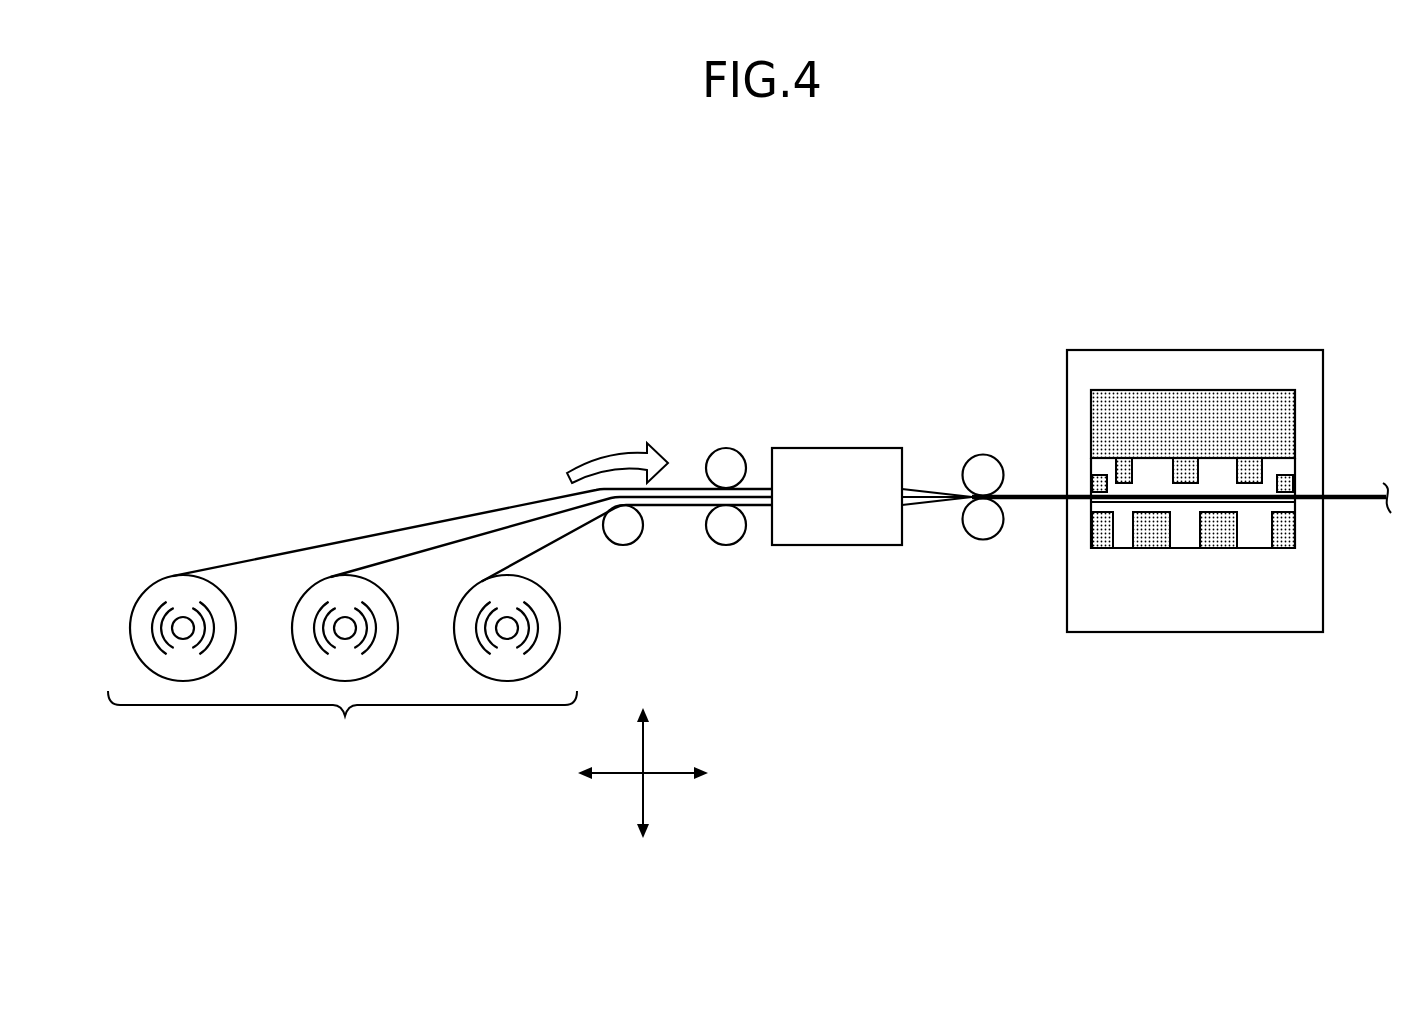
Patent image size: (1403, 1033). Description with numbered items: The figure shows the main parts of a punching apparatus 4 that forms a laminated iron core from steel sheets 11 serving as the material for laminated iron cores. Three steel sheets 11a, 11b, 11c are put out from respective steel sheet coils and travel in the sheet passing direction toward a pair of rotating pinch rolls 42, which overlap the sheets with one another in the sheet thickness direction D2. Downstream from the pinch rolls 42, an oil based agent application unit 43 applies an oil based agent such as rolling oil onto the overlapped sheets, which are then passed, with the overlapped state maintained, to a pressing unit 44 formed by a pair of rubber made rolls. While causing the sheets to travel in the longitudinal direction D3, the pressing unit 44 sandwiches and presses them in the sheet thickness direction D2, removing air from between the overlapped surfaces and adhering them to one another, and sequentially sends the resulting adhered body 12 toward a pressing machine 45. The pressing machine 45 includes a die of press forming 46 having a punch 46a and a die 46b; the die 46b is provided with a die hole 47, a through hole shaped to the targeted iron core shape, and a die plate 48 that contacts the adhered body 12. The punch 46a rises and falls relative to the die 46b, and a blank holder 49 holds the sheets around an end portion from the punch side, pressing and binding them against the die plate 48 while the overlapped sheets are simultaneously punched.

The punching apparatus 4 is at (1128, 189).
The steel sheets 11 is at (342, 662).
The steel sheet 11a is at (316, 543).
The steel sheet 11b is at (427, 547).
The steel sheet 11c is at (531, 548).
The adhered body 12 is at (1038, 507).
The pinch rolls 42 is at (727, 428).
The oil based agent application unit 43 is at (873, 447).
The pressing unit 44 is at (988, 436).
The pressing machine 45 is at (1280, 349).
The die of press forming 46 is at (1292, 410).
The punch 46a is at (1258, 473).
The die 46b is at (1218, 540).
The die hole 47 is at (1181, 540).
The die plate 48 is at (1100, 520).
The blank holder 49 is at (1093, 482).
The sheet thickness direction D2 is at (643, 732).
The longitudinal direction D3 is at (680, 775).